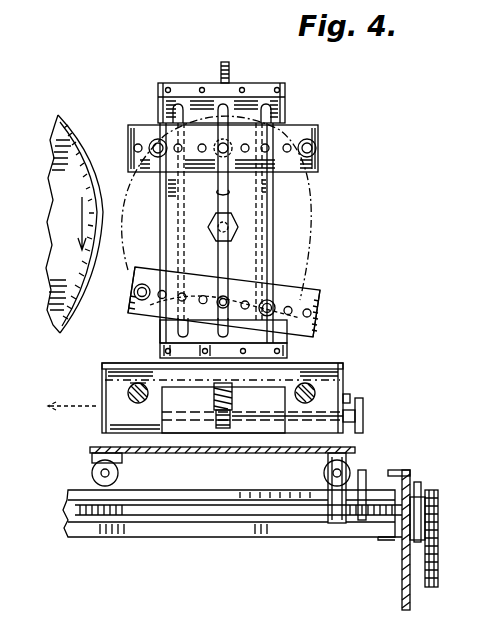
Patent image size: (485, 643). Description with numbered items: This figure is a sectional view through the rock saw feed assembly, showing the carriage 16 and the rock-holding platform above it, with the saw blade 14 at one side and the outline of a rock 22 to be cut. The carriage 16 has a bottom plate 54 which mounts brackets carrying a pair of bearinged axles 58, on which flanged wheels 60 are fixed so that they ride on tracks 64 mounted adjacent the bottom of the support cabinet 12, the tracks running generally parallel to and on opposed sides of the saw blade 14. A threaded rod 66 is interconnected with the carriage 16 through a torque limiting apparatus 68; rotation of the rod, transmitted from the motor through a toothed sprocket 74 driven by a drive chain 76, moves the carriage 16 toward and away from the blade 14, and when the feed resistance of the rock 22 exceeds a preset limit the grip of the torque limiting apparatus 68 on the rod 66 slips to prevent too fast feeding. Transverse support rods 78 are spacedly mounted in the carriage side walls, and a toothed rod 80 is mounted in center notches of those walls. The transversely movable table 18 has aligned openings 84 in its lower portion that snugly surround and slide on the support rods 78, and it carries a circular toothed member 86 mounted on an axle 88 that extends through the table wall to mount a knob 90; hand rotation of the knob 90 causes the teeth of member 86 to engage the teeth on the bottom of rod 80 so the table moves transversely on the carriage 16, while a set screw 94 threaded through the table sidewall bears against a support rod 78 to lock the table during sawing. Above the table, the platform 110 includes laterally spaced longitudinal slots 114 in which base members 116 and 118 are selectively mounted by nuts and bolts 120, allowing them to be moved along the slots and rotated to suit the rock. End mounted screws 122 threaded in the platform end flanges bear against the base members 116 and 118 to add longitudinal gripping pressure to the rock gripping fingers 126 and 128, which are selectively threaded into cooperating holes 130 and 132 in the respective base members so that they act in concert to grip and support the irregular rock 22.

The support cabinet 12 is at (402, 600).
The saw blade 14 is at (62, 128).
The carriage 16 is at (92, 440).
The transversely movable table 18 is at (343, 366).
The rock 22 is at (310, 248).
The bottom plate 54 is at (212, 454).
The bearinged axle 58 is at (120, 473).
The flanged wheel 60 is at (92, 473).
The track 64 is at (194, 526).
The threaded rod 66 is at (280, 518).
The torque limiting apparatus 68 is at (366, 478).
The toothed sprocket 74 is at (430, 490).
The drive chain 76 is at (420, 570).
The transverse support rod 78 is at (128, 393).
The toothed rod 80 is at (214, 400).
The aligned opening 84 is at (140, 383).
The circular toothed member 86 is at (218, 424).
The axle 88 is at (268, 418).
The knob 90 is at (364, 405).
The set screw 94 is at (350, 396).
The platform 110 is at (282, 108).
The longitudinal slot 114 is at (218, 192).
The base member 116 is at (318, 128).
The base member 118 is at (320, 302).
The nuts and bolts 120 is at (230, 140).
The end mounted screw 122 is at (230, 70).
The rock gripping finger 126 is at (155, 139).
The rock gripping finger 128 is at (140, 312).
The hole 130 is at (134, 148).
The hole 132 is at (203, 295).